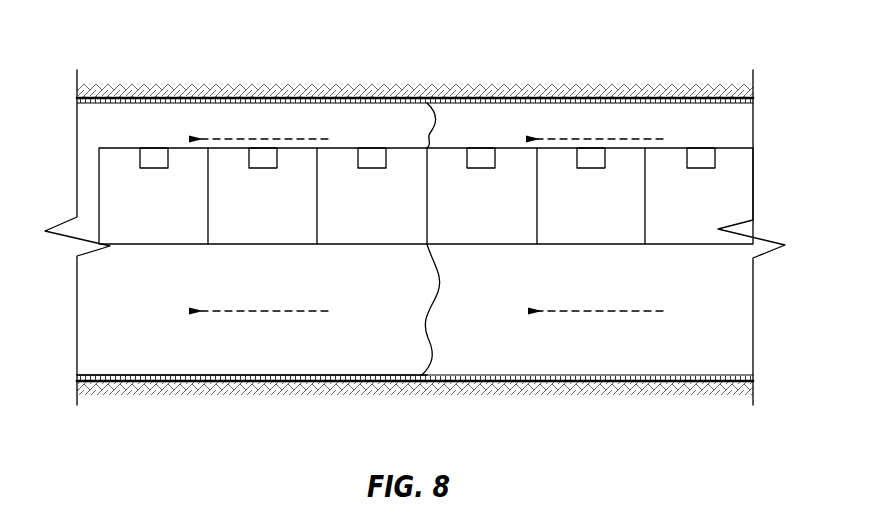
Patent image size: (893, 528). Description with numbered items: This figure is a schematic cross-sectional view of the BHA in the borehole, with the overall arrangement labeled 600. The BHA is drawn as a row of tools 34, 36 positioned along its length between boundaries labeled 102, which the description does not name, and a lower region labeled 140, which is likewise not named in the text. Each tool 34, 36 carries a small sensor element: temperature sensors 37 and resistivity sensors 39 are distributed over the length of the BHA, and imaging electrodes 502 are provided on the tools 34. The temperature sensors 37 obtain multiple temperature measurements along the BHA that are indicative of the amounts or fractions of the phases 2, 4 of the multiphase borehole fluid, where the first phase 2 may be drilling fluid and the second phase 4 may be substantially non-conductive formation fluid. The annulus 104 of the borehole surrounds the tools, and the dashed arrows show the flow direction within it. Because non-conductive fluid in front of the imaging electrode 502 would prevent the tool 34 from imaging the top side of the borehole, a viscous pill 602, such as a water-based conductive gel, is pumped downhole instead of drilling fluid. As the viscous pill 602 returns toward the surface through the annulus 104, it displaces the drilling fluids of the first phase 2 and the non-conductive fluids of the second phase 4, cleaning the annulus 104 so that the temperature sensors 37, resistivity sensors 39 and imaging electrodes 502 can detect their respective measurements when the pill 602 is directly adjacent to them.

The first phase 2 is at (250, 311).
The second phase 4 is at (252, 139).
The tool 34 is at (167, 234).
The tool 36 is at (276, 234).
The temperature sensor 37 is at (375, 168).
The resistivity sensor 39 is at (268, 168).
The wall 102 is at (687, 104).
The annulus 104 is at (337, 121).
The floor 140 is at (205, 355).
The imaging electrode 502 is at (153, 158).
The compartment system 600 is at (619, 92).
The viscous pill 602 is at (590, 139).